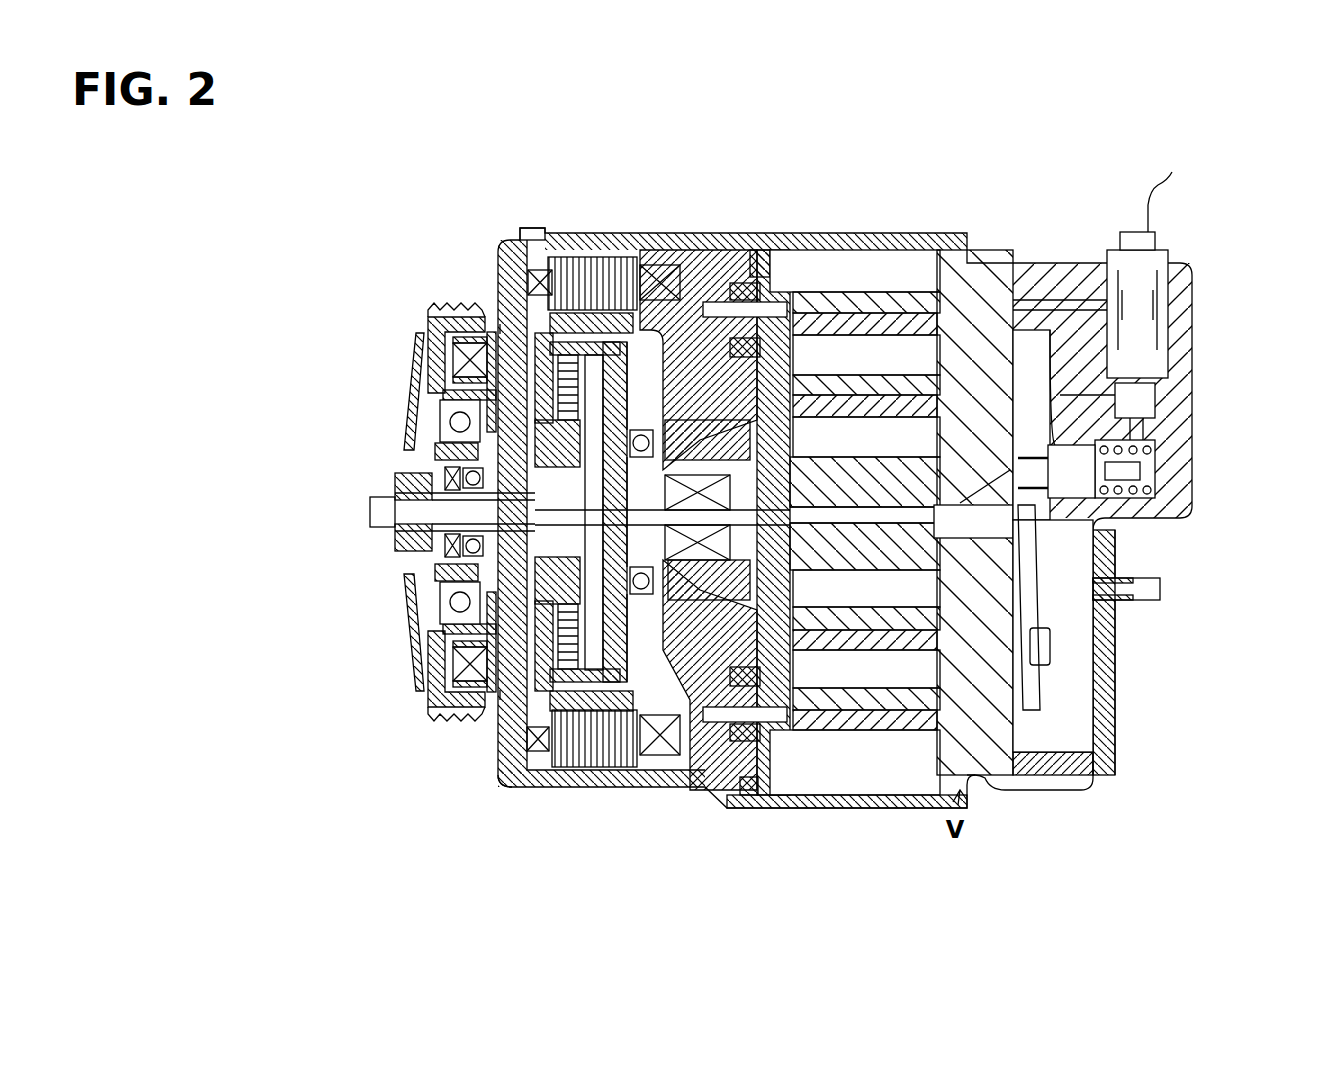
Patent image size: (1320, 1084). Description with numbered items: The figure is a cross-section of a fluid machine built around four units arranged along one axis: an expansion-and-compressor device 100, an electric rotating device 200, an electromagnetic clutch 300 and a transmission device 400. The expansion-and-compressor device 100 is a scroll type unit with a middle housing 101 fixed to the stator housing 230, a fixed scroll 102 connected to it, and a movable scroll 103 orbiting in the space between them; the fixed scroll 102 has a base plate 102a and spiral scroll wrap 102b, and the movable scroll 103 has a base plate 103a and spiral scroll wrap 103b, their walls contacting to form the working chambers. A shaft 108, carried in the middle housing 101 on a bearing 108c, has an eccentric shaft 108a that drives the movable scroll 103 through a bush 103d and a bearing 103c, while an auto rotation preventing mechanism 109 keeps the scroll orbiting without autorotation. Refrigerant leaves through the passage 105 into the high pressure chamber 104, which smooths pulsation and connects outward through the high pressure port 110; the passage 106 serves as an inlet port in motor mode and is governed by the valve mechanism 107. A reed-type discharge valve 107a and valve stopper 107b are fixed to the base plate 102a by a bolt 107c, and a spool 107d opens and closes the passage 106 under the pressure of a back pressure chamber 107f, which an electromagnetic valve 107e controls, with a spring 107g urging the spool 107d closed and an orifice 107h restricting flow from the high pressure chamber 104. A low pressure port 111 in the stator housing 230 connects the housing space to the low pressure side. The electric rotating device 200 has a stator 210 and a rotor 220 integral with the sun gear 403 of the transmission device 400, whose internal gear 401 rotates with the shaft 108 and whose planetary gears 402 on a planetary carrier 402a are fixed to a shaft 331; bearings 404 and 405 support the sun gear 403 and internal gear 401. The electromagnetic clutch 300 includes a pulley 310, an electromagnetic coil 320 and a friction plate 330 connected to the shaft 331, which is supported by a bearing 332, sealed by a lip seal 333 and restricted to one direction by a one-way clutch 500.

The expansion-and-compressor device 100 is at (867, 228).
The middle housing 101 is at (718, 233).
The fixed scroll 102 is at (982, 795).
The base plate 102a is at (985, 782).
The spiral scroll wrap 102b is at (880, 708).
The movable scroll 103 is at (905, 620).
The base plate 103a is at (775, 640).
The spiral scroll wrap 103b is at (822, 640).
The bearing 103c is at (803, 330).
The bush 103d is at (440, 420).
The high pressure chamber 104 is at (1070, 720).
The passage 105 is at (1045, 620).
The passage 106 is at (1018, 400).
The valve mechanism 107 is at (1178, 318).
The discharge valve 107a is at (1032, 600).
The valve stopper 107b is at (1045, 640).
The bolt 107c is at (1090, 730).
The spool 107d is at (1055, 335).
The electromagnetic valve 107e is at (1155, 265).
The back pressure chamber 107f is at (1105, 482).
The spring 107g is at (1150, 455).
The orifice 107h is at (1155, 395).
The shaft 108 is at (590, 512).
The eccentric shaft 108a is at (905, 250).
The bearing 108c is at (672, 600).
The auto rotation preventing mechanism 109 is at (748, 283).
The high pressure port 110 is at (1160, 588).
The low pressure port 111 is at (525, 228).
The electric rotating device 200 is at (612, 236).
The stator 210 is at (688, 248).
The rotor 220 is at (578, 262).
The stator housing 230 is at (598, 258).
The electromagnetic clutch 300 is at (418, 318).
The pulley 310 is at (425, 312).
The electromagnetic coil 320 is at (478, 345).
The friction plate 330 is at (416, 345).
The shaft 331 is at (440, 504).
The bearing 332 is at (415, 612).
The lip seal 333 is at (455, 548).
The transmission device 400 is at (500, 255).
The internal gear 401 is at (536, 262).
The planetary gears 402 is at (580, 770).
The planetary carrier 402a is at (500, 770).
The sun gear 403 is at (562, 770).
The bearing 404 is at (437, 458).
The bearing 405 is at (628, 770).
The one-way clutch 500 is at (483, 712).